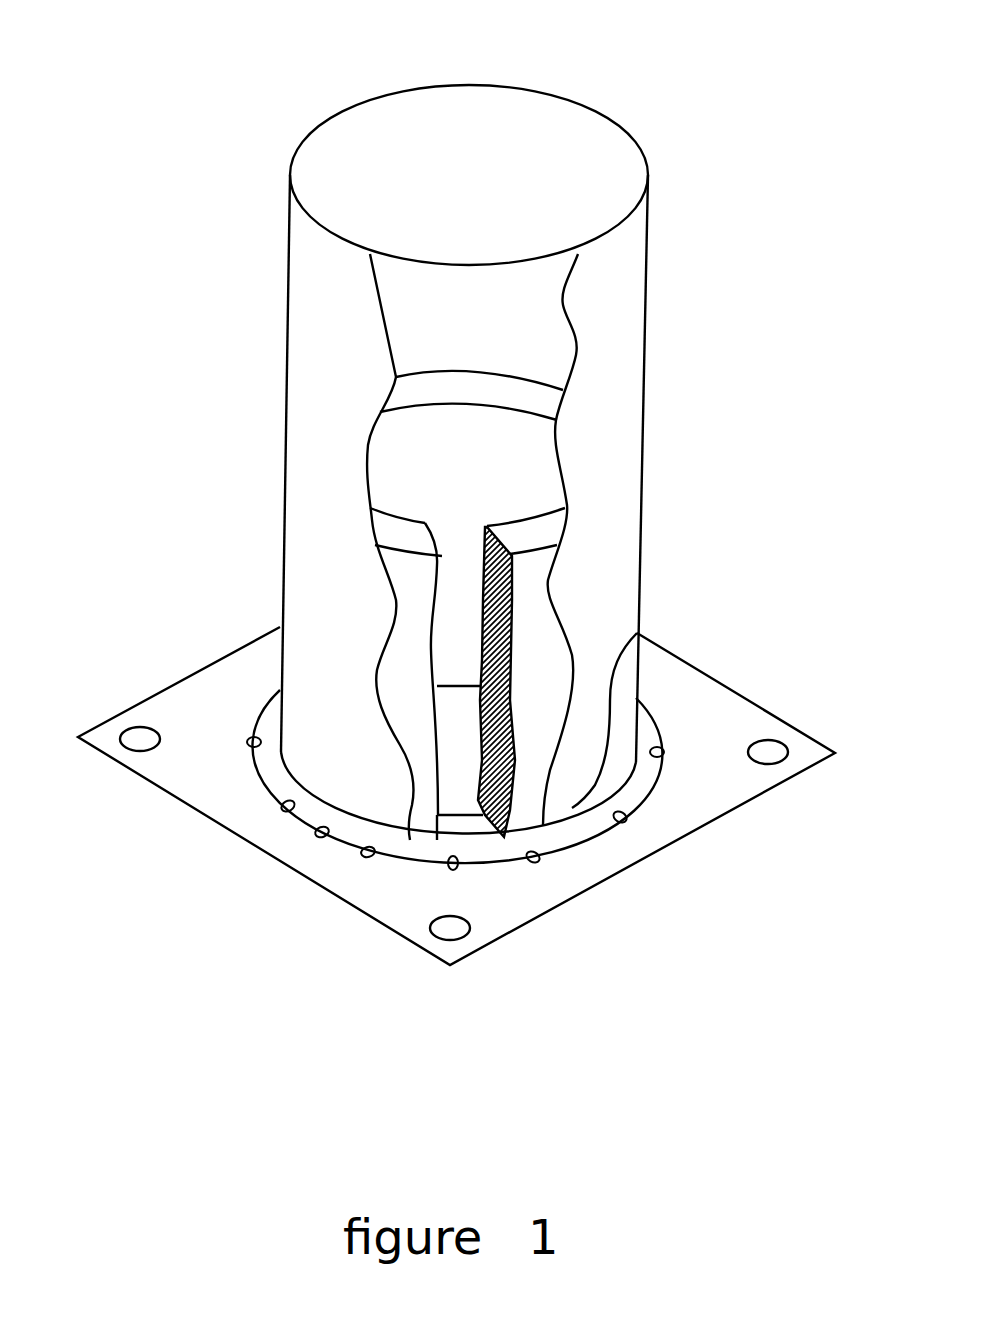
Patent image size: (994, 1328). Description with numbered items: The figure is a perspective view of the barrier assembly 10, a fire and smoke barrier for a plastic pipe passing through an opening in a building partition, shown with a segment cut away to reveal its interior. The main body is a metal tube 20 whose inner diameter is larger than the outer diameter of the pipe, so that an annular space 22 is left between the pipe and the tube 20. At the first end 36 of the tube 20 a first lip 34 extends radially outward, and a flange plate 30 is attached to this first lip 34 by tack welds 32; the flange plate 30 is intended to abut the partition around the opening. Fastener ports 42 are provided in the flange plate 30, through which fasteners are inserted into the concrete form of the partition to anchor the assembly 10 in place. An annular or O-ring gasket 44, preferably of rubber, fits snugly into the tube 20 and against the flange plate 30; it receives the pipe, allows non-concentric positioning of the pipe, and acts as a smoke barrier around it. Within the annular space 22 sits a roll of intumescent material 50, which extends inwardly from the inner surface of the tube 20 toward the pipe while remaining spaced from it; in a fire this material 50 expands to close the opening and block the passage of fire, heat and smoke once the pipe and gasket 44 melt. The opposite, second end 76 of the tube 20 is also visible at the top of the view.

The barrier assembly 10 is at (642, 70).
The metal tube 20 is at (617, 405).
The second end 76 is at (618, 257).
The annular space 22 is at (518, 347).
The roll of intumescent material 50 is at (500, 390).
The first end 36 is at (637, 633).
The flange plate 30 is at (687, 703).
The fastener ports 42 is at (140, 738).
The tack welds 32 is at (368, 852).
The first lip 34 is at (627, 795).
The annular gasket 44 is at (463, 828).